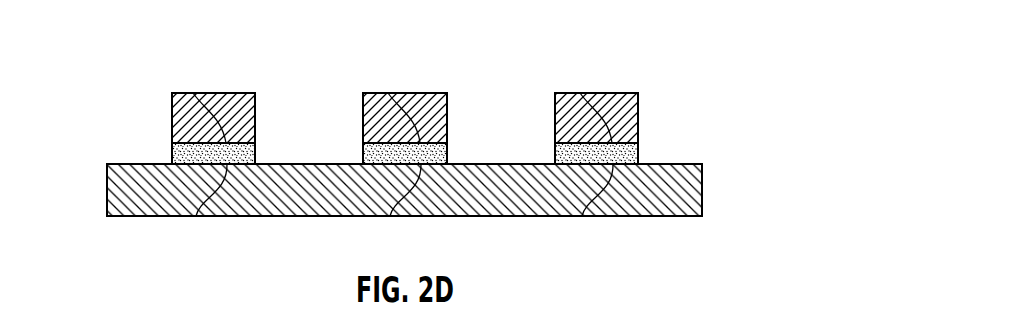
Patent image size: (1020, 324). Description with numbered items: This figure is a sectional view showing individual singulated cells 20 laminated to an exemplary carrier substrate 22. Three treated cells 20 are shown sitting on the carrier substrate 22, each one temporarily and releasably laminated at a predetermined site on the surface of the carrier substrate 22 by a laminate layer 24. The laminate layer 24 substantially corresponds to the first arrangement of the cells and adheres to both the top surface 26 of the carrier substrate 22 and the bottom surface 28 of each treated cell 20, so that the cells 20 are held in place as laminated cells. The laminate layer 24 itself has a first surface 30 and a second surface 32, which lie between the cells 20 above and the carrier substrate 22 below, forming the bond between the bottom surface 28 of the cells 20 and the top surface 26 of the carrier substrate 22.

The singulated cells 20 is at (258, 82).
The carrier substrate 22 is at (725, 156).
The laminate layer 24 is at (259, 154).
The top surface 26 is at (112, 163).
The bottom surface 28 is at (175, 148).
The first surface 30 is at (193, 93).
The second surface 32 is at (196, 216).